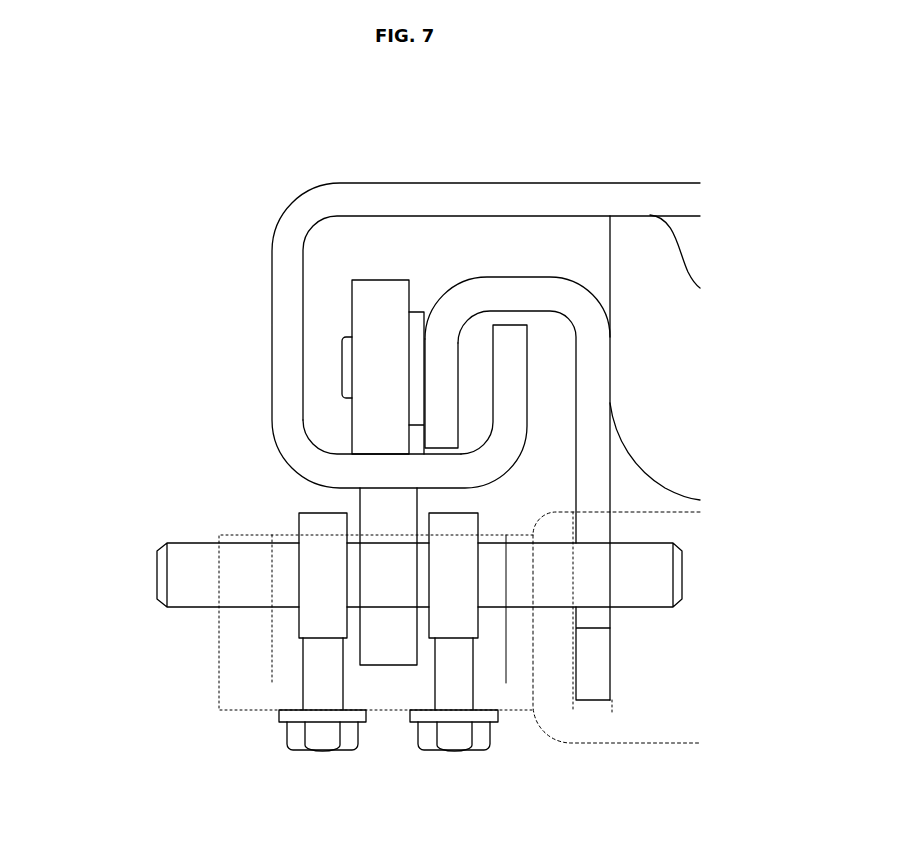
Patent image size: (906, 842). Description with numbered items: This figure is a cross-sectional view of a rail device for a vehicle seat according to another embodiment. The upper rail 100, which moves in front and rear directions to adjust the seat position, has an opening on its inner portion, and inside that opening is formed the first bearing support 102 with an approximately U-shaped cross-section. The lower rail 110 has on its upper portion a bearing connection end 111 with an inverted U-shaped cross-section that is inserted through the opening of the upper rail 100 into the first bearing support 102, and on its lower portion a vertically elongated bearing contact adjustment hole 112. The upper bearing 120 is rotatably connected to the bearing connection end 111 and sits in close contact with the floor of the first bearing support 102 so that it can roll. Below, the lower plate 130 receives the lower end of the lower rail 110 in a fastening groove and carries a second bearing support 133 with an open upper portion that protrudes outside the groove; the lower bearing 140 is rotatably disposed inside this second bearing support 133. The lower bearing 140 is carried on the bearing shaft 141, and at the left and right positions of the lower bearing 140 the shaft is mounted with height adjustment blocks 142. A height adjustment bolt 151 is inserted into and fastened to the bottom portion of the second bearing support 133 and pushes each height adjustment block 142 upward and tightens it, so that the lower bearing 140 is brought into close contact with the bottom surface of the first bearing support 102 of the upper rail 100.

The upper rail 100 is at (343, 180).
The first bearing support 102 is at (385, 465).
The lower rail 110 is at (515, 266).
The bearing connection end 111 is at (450, 382).
The bearing contact adjustment hole 112 is at (592, 548).
The upper bearing 120 is at (363, 302).
The lower plate 130 is at (205, 698).
The second bearing support 133 is at (228, 663).
The lower bearing 140 is at (392, 653).
The bearing shaft 141 is at (173, 573).
The height adjustment blocks 142 is at (440, 520).
The height adjustment bolt 151 is at (455, 742).